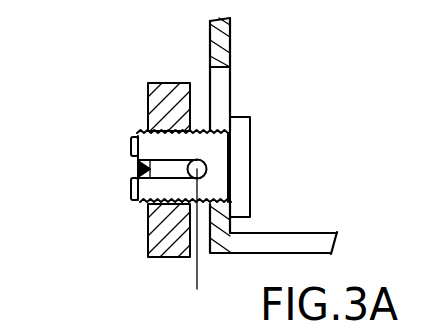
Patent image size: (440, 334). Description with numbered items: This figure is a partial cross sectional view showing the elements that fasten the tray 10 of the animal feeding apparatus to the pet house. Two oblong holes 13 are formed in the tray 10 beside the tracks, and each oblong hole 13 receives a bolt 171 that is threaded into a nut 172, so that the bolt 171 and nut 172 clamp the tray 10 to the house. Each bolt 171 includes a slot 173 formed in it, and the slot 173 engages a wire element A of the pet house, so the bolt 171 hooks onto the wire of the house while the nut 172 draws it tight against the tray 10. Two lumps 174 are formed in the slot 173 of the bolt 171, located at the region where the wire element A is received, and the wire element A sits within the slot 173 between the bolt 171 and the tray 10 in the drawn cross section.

The tray 10 is at (294, 244).
The oblong hole 13 is at (220, 88).
The bolt 171 is at (203, 188).
The nut 172 is at (168, 84).
The slot 173 is at (167, 171).
The lump 174 is at (133, 174).
The wire element A is at (193, 247).